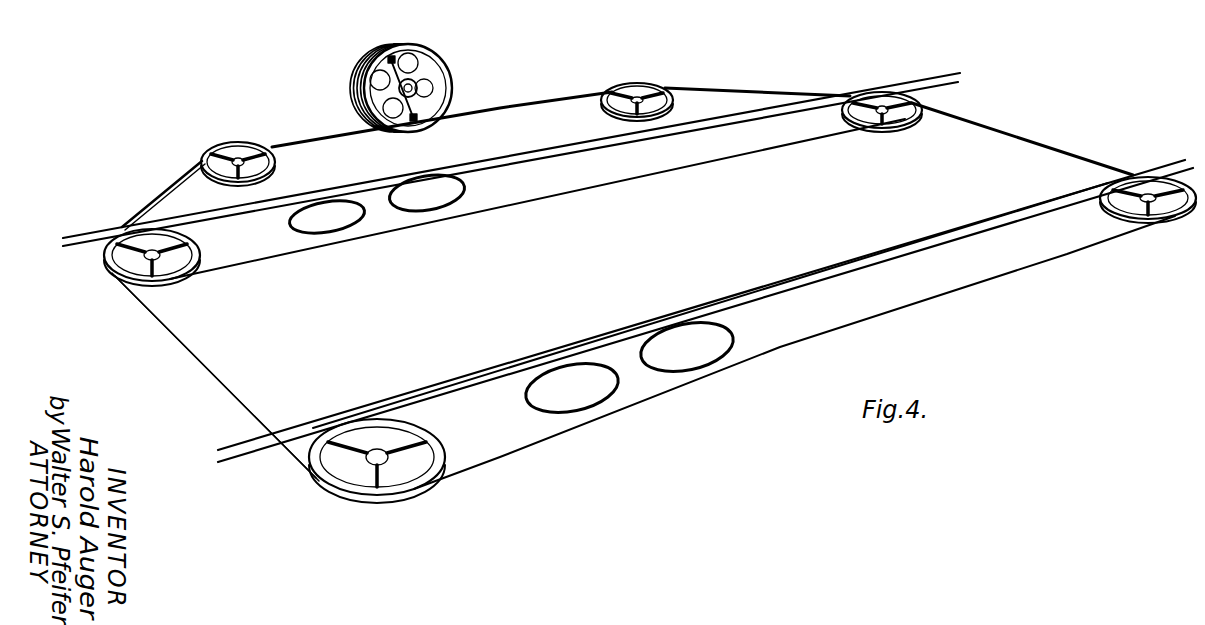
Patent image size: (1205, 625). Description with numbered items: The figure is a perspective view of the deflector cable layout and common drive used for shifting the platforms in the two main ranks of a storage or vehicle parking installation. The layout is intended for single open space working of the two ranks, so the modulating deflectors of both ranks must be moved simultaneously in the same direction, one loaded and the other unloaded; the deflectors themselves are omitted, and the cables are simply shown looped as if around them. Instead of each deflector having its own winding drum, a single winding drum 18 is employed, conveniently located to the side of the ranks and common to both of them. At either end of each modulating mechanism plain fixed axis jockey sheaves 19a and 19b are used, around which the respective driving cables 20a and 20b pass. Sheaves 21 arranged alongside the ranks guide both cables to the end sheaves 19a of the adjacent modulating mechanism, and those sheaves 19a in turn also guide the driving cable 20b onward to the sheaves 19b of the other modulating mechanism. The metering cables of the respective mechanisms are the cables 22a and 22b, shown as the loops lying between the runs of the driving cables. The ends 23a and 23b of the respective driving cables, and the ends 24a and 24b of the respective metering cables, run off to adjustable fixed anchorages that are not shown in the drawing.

The winding drum 18 is at (442, 73).
The jockey sheaves 19a is at (116, 280).
The jockey sheaves 19b is at (320, 483).
The driving cable 20a is at (163, 195).
The driving cable 20b is at (193, 166).
The sheaves 21 is at (235, 143).
The metering cable 22a is at (392, 221).
The metering cable 22b is at (652, 386).
The driving cable end 23a is at (82, 247).
The driving cable end 23b is at (238, 463).
The metering cable end 24a is at (96, 232).
The metering cable end 24b is at (235, 445).